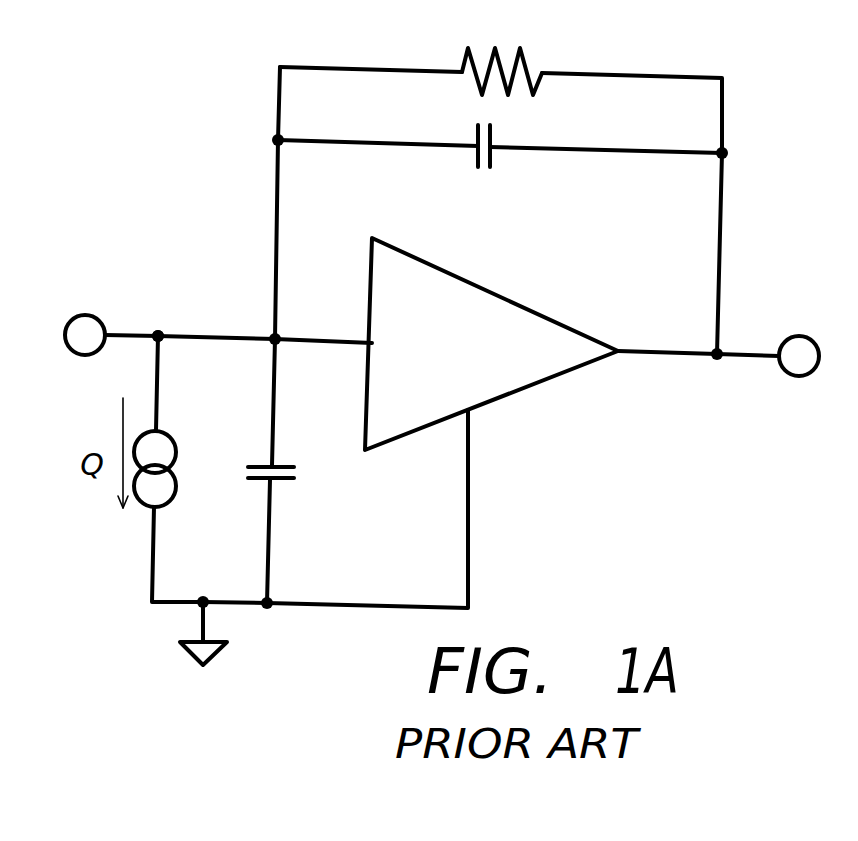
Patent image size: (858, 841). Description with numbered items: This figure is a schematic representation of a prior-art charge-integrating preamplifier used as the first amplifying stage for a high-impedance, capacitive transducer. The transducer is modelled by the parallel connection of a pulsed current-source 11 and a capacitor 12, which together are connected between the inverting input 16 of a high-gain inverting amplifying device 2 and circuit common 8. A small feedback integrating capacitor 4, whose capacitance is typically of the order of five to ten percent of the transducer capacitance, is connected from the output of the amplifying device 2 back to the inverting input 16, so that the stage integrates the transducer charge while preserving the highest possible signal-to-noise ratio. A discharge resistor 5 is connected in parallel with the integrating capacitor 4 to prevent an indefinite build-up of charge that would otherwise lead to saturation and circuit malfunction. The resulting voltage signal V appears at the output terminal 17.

The high-gain inverting amplifying device 2 is at (491, 342).
The feedback integrating capacitor 4 is at (504, 158).
The discharge resistor 5 is at (502, 49).
The circuit common 8 is at (222, 633).
The pulsed current-source 11 is at (174, 486).
The capacitor 12 is at (282, 444).
The inverting input 16 is at (175, 310).
The terminal 17 is at (810, 337).